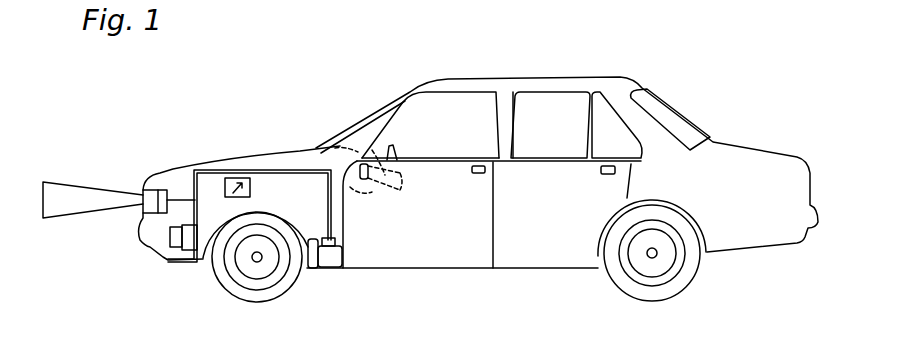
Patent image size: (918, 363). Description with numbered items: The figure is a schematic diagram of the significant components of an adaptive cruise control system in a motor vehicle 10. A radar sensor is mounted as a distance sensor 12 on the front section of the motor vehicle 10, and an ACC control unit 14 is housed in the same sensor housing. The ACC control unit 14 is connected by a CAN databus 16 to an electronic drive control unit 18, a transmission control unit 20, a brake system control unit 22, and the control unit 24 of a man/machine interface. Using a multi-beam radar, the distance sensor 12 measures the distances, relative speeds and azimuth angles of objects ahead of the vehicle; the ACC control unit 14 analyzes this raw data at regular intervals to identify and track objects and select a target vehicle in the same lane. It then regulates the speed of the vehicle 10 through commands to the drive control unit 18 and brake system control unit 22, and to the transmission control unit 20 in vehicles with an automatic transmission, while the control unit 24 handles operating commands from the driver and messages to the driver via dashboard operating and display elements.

The motor vehicle 10 is at (632, 76).
The distance sensor 12 is at (143, 190).
The ACC control unit 14 is at (168, 182).
The databus 16 is at (290, 168).
The electronic drive control unit 18 is at (250, 186).
The transmission control unit 20 is at (333, 268).
The brake system control unit 22 is at (168, 260).
The control unit of a man/machine interface 24 is at (368, 179).